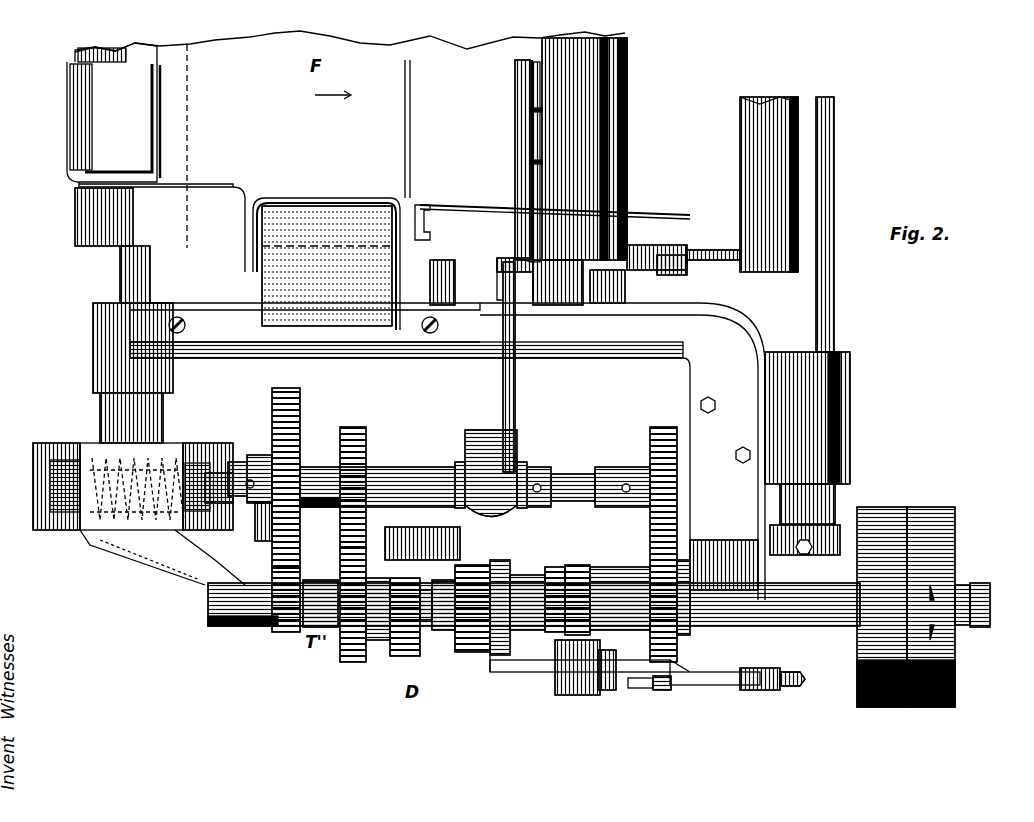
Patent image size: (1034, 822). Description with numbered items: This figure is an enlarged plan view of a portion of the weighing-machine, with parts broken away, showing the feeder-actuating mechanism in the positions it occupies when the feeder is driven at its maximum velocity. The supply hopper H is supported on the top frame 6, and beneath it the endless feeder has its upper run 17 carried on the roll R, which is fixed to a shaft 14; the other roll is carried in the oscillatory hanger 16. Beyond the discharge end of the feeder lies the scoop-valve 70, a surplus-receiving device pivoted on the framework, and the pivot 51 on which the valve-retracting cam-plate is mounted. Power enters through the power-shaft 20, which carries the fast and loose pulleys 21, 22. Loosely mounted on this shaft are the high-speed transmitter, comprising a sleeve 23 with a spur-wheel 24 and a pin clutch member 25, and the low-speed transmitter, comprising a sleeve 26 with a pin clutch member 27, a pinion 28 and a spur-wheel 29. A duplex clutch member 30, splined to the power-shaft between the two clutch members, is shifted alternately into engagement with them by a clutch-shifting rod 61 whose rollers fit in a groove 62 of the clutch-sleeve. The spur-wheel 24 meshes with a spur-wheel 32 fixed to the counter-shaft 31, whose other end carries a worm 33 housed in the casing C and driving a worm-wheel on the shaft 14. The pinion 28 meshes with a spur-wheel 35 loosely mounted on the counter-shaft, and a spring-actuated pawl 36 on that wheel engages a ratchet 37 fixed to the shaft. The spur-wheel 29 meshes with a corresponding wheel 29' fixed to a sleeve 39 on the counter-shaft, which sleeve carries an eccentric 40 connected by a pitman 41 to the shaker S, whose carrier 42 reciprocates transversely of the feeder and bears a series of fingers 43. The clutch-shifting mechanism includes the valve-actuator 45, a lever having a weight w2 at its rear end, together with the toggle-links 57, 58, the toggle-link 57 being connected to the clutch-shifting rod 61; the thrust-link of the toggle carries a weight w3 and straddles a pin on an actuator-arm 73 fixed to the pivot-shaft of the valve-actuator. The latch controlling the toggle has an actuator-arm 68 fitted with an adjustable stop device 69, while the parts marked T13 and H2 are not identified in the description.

The upper run 17 is at (268, 52).
The supply hopper H is at (113, 112).
The roll R is at (188, 142).
The shaft 14 is at (125, 272).
The shaker S is at (515, 136).
The fingers or plates 43 is at (540, 160).
The carrier 42 is at (516, 175).
The oscillatory hanger 16 is at (612, 195).
The scoop-valve 70 is at (750, 184).
The pivot of cam-plate 51 is at (818, 306).
The top frame 6 is at (447, 430).
The spur-wheel 35 is at (286, 400).
The pinion 28 is at (283, 632).
The spur-wheel 29' is at (354, 469).
The spur-wheel 29 is at (334, 621).
The spur-wheel 32 is at (662, 428).
The ratchet 37 is at (259, 456).
The spring-actuated pawl 36 is at (258, 520).
The sleeve 39 is at (404, 470).
The eccentric 40 is at (470, 436).
The pitman 41 is at (516, 392).
The counter-shaft 31 is at (558, 474).
The casing C is at (139, 503).
The worm 33 is at (110, 500).
The power-shaft 20 is at (208, 603).
The sleeve 26 is at (318, 588).
The pin clutch member 27 is at (408, 640).
The duplex clutch member 30 is at (474, 652).
The weight w2 is at (420, 545).
The clutch-shifting rod 61 is at (500, 560).
The groove 62 is at (516, 572).
The valve-actuator 45 is at (548, 567).
The pin clutch member 25 is at (575, 565).
The sleeve 23 is at (622, 600).
The spur-wheel 24 is at (682, 580).
The fast pulley 21 is at (880, 515).
The loose pulley 22 is at (934, 515).
The toggle-link 57 is at (530, 672).
The toggle-link 58 is at (700, 686).
The actuator-arm 68 is at (752, 690).
The adjustable stop device 69 is at (798, 678).
The weight w3 is at (585, 695).
The support T13 is at (610, 690).
The pin H2 is at (645, 690).
The actuator-arm 73 is at (665, 690).